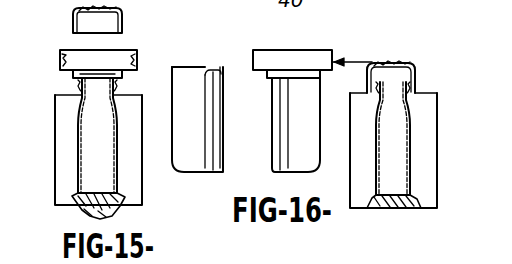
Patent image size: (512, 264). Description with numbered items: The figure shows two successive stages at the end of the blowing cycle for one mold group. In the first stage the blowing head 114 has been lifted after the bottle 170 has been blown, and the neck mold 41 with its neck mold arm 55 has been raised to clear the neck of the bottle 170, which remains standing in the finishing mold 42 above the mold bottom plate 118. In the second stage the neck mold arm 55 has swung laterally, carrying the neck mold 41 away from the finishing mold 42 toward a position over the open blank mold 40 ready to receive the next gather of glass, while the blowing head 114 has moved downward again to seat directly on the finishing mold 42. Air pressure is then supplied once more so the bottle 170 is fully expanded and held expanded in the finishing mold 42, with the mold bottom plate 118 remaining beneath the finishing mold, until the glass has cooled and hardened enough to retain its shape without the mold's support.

In FIG. 16, the blank mold 40 is at (275, 125).
In FIG. 15, the neck mold 41 is at (60, 56).
In FIG. 16, the neck mold 41 is at (288, 50).
In FIG. 15, the finishing mold 42 is at (62, 110).
In FIG. 16, the finishing mold 42 is at (437, 110).
In FIG. 15, the neck mold arm 55 is at (58, 68).
In FIG. 15, the blowing head 114 is at (73, 22).
In FIG. 16, the blowing head 114 is at (416, 70).
In FIG. 15, the mold bottom plate 118 is at (78, 208).
In FIG. 16, the mold bottom plate 118 is at (402, 208).
In FIG. 15, the blown bottle 170 is at (88, 142).
In FIG. 16, the blown bottle 170 is at (402, 150).